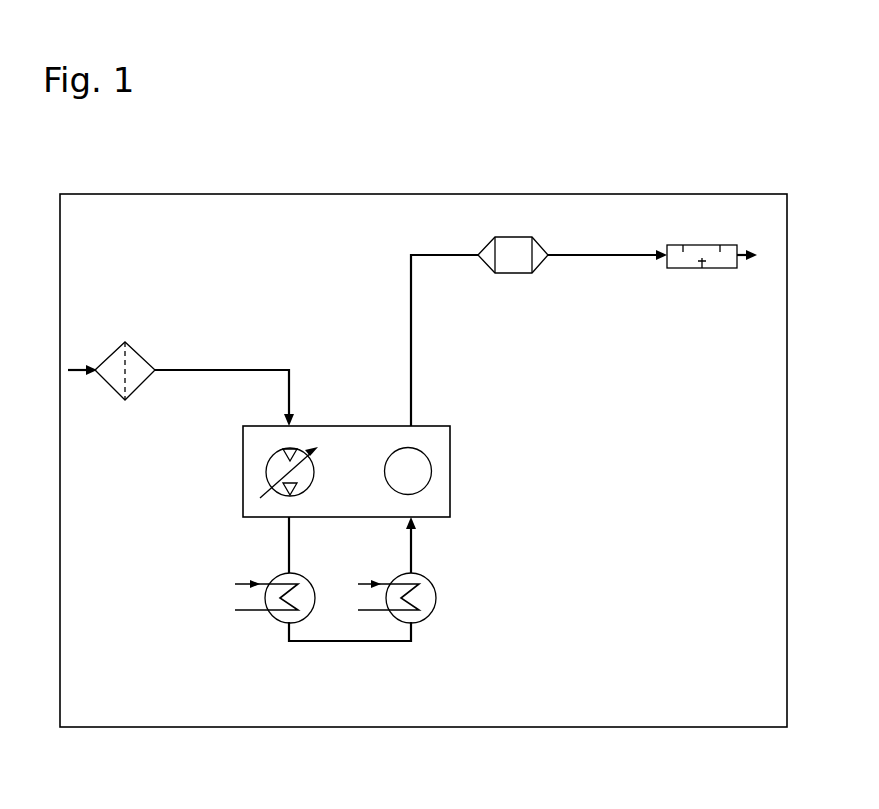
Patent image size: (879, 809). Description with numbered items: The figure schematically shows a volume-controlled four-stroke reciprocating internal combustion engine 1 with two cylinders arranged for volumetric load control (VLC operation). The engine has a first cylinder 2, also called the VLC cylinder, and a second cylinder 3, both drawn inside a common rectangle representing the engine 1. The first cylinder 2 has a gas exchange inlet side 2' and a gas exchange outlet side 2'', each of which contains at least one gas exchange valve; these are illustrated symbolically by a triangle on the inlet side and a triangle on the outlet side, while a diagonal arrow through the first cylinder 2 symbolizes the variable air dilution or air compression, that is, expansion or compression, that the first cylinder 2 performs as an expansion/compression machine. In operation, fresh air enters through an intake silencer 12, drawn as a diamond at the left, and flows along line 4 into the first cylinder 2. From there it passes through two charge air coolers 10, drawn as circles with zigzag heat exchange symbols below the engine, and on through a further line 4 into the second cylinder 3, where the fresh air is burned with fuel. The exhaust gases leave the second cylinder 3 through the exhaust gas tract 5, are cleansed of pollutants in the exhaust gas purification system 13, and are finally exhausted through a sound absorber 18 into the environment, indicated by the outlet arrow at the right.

The internal combustion engine 1 is at (505, 445).
The first cylinder 2 is at (264, 472).
The gas exchange inlet side 2' is at (272, 425).
The gas exchange outlet side 2'' is at (310, 524).
The second cylinder 3 is at (401, 484).
The line 4 is at (222, 368).
The exhaust gas tract 5 is at (412, 362).
The charge air coolers 10 is at (282, 621).
The intake silencer 12 is at (133, 350).
The exhaust gas purification system 13 is at (512, 275).
The sound absorber 18 is at (690, 270).